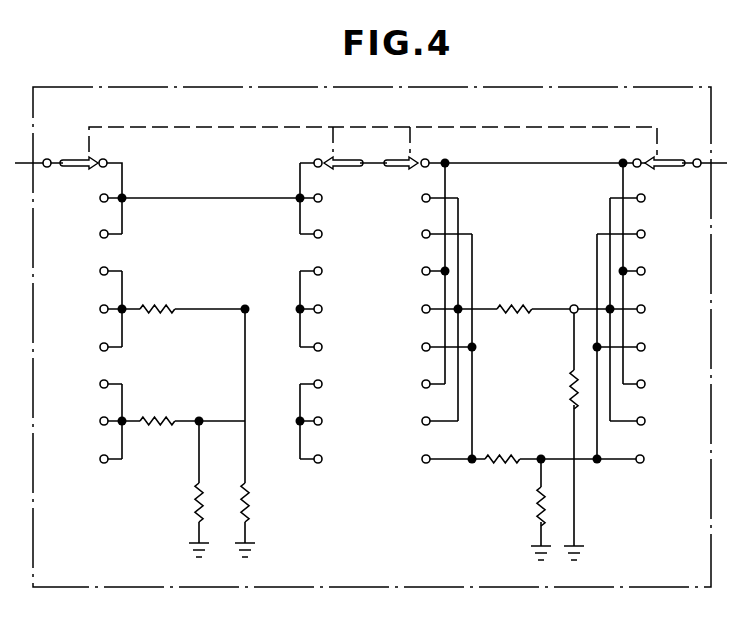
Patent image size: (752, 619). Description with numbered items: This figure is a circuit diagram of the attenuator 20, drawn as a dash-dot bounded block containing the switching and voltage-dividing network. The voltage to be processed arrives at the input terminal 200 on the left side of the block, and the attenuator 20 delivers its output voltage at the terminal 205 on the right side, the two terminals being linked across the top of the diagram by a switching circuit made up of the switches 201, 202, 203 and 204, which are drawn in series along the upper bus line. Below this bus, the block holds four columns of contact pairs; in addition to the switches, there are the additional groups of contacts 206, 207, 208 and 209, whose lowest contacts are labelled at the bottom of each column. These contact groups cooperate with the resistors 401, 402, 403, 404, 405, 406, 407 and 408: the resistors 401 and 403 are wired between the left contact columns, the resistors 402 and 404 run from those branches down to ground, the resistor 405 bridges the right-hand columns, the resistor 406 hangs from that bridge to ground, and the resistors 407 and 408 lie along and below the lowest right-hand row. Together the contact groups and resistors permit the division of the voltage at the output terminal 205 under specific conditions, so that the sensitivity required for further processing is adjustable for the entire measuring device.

The attenuator 20 is at (370, 550).
The terminal 200 is at (46, 159).
The switch 201 is at (79, 167).
The switch 202 is at (338, 170).
The switch 203 is at (402, 167).
The switch 204 is at (665, 170).
The terminal 205 is at (703, 151).
The group of contacts 206 is at (105, 464).
The group of contacts 207 is at (317, 464).
The group of contacts 208 is at (426, 465).
The group of contacts 209 is at (640, 465).
The resistor 401 is at (158, 304).
The resistor 402 is at (282, 507).
The resistor 403 is at (158, 415).
The resistor 404 is at (193, 495).
The resistor 405 is at (505, 307).
The resistor 406 is at (570, 398).
The resistor 407 is at (506, 456).
The resistor 408 is at (537, 510).